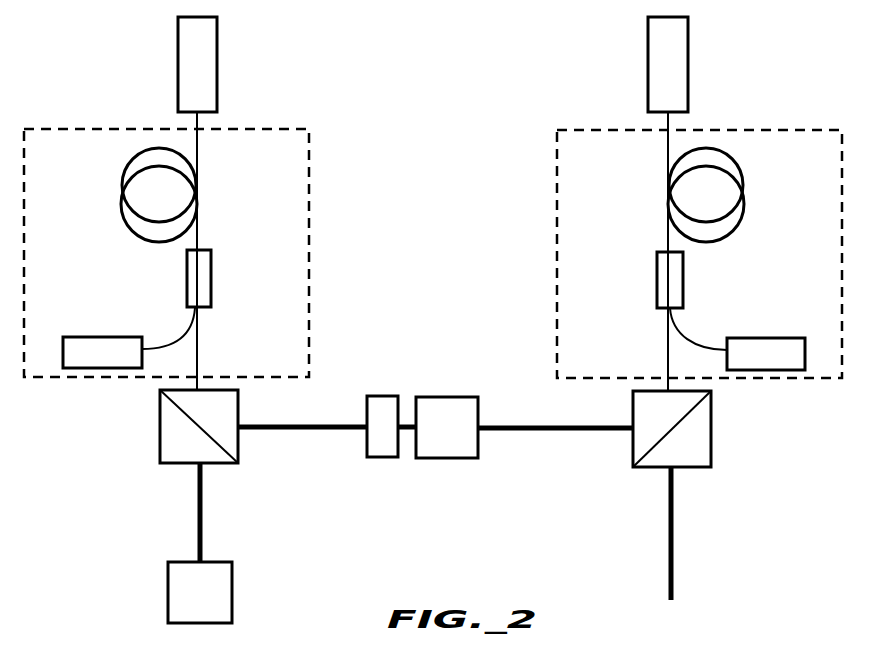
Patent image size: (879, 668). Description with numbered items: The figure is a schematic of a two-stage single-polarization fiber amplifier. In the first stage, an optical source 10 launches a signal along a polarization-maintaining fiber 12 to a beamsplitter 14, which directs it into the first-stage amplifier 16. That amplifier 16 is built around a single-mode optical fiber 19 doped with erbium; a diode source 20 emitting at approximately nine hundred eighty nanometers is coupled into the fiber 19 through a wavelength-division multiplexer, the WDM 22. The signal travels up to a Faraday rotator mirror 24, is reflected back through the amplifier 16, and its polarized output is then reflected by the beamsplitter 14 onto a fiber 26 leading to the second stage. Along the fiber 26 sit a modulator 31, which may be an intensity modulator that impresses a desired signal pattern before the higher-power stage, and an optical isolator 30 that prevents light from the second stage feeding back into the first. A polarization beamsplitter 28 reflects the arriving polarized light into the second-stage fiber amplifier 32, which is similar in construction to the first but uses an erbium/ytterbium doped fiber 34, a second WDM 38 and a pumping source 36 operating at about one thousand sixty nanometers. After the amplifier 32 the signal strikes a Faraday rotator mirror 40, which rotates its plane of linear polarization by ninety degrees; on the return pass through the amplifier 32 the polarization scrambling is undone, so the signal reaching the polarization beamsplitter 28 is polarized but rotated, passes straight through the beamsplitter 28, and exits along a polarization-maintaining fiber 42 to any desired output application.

The optical source 10 is at (232, 600).
The polarization-maintaining fiber 12 is at (197, 503).
The beamsplitter 14 is at (160, 440).
The amplifier 16 is at (310, 200).
The single-mode optical fiber 19 is at (122, 188).
The diode source 20 is at (108, 337).
The 980/1550 WDM 22 is at (187, 287).
The Faraday rotator mirror 24 is at (218, 68).
The fiber 26 is at (283, 430).
The polarization beamsplitter 28 is at (649, 467).
The optical isolator 30 is at (446, 397).
The modulator 31 is at (386, 396).
The fiber amplifier 32 is at (783, 130).
The Er/Yb doped fiber 34 is at (745, 187).
The 1060 nm pumping source 36 is at (758, 338).
The 1060/1550 WDM 38 is at (657, 287).
The Faraday rotator mirror 40 is at (689, 68).
The polarization-maintaining fiber 42 is at (674, 545).